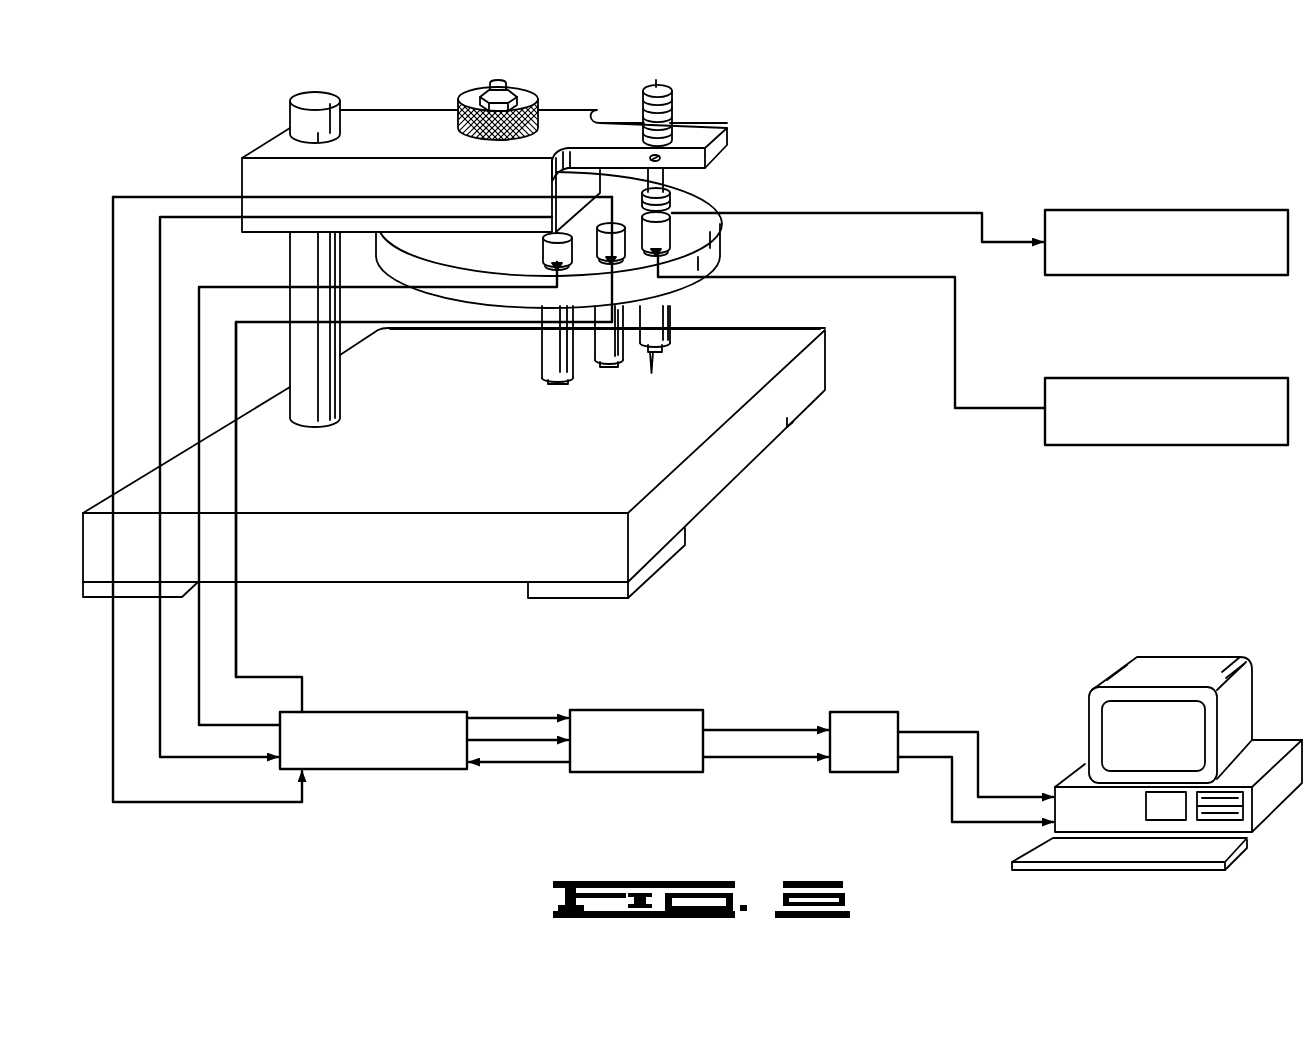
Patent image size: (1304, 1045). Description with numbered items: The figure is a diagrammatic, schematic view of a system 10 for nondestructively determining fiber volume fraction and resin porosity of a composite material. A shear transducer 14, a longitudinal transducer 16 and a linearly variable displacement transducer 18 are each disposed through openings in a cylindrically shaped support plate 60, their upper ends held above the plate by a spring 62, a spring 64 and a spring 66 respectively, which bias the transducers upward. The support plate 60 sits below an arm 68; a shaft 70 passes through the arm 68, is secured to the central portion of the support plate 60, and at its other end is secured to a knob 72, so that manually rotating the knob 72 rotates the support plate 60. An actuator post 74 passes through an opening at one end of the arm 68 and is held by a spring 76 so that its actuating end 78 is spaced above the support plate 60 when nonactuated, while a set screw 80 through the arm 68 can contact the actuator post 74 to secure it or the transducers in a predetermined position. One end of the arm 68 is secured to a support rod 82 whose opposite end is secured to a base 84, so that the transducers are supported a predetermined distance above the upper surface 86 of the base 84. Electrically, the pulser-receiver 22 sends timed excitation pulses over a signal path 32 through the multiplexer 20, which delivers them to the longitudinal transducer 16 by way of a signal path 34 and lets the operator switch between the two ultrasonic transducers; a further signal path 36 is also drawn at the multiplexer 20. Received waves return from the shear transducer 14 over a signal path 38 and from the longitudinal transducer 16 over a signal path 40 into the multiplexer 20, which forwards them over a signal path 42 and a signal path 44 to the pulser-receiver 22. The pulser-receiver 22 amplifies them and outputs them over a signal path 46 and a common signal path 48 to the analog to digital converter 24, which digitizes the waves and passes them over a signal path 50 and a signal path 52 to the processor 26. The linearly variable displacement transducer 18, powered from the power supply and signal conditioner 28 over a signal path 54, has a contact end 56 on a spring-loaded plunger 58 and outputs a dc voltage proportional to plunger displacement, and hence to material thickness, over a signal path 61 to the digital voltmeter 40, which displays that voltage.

The system 10 is at (722, 91).
The shear transducer 14 is at (549, 341).
The longitudinal transducer 16 is at (605, 340).
The linearly variable displacement transducer 18 is at (665, 322).
The multiplexer 20 is at (394, 710).
The pulser-receiver 22 is at (654, 708).
The analog to digital converter 24 is at (876, 710).
The processor 26 is at (1176, 653).
The power supply and signal conditioner 28 is at (1155, 376).
The signal path 32 is at (508, 766).
The signal path 34 is at (238, 614).
The signal line 36 is at (201, 644).
The signal path 38 is at (183, 219).
The digital voltmeter 40 is at (183, 195).
The signal path 42 is at (521, 715).
The signal path 44 is at (493, 737).
The signal path 46 is at (730, 727).
The common signal path 48 is at (764, 754).
The signal path 50 is at (966, 729).
The signal path 52 is at (919, 754).
The signal path 54 is at (878, 275).
The contact end 56 is at (651, 370).
The plunger 58 is at (651, 361).
The support plate 60 is at (692, 174).
The signal path 61 is at (896, 211).
The spring 62 is at (545, 247).
The spring 64 is at (628, 252).
The spring 66 is at (672, 226).
The arm 68 is at (377, 114).
The shaft 70 is at (503, 83).
The knob 72 is at (458, 110).
The actuator post 74 is at (657, 82).
The spring 76 is at (647, 117).
The actuating end 78 is at (705, 202).
The set screw 80 is at (660, 157).
The support rod 82 is at (288, 267).
The base 84 is at (687, 499).
The upper surface 86 is at (668, 447).